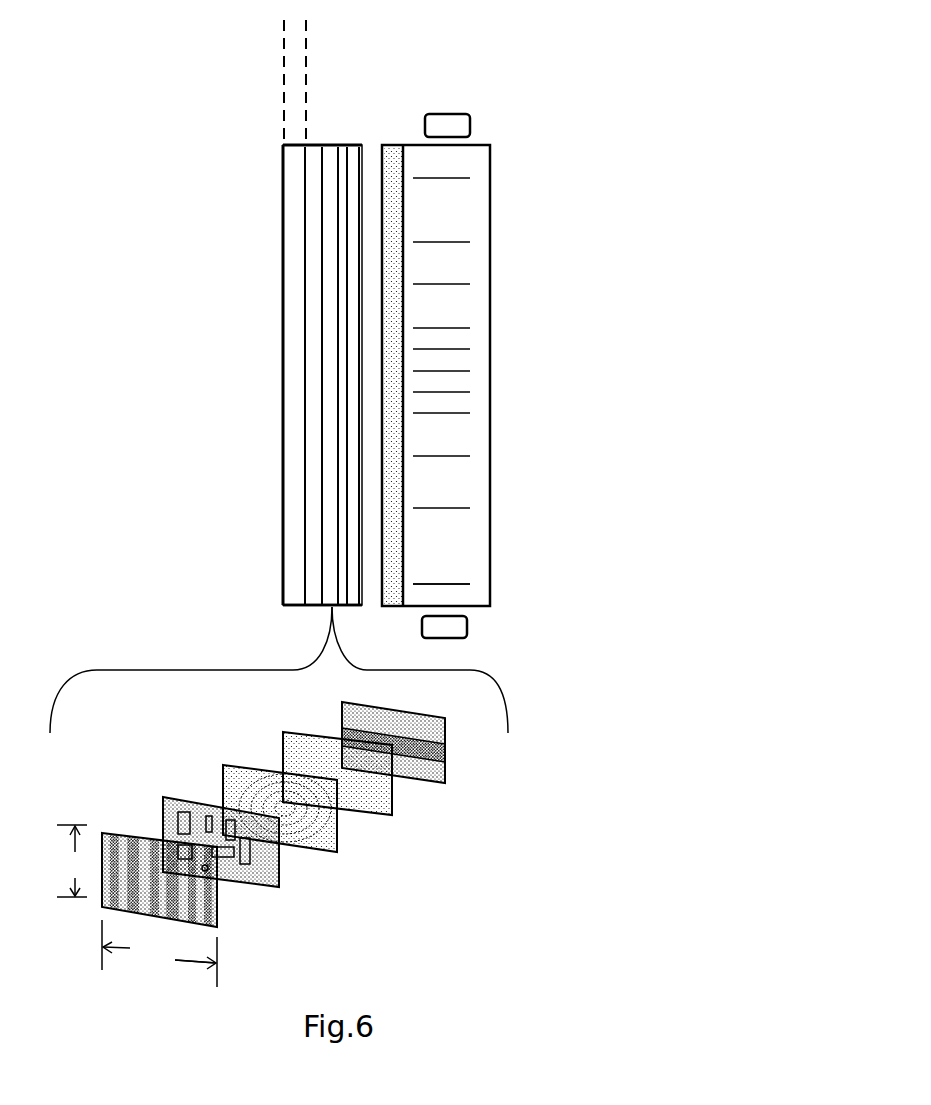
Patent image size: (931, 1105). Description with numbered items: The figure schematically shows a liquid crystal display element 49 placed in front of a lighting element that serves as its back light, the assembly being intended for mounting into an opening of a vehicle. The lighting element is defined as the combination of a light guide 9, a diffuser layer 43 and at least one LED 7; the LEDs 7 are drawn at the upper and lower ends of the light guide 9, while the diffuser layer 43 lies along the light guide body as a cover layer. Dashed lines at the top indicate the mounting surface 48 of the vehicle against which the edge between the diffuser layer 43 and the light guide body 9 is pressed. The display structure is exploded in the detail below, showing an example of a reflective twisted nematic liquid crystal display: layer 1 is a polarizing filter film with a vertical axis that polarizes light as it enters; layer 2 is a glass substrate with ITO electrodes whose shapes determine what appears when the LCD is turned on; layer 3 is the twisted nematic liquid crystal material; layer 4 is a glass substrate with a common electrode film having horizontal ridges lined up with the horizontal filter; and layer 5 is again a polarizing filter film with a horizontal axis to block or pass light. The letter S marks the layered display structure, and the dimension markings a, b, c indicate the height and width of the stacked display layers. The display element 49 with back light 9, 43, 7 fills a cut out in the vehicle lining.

The mounting surface 48 is at (284, 72).
The security element / layered structure S is at (273, 210).
The display element 49 is at (283, 605).
The light guide 9 is at (467, 477).
The diffuser layer 43 is at (388, 595).
The LED 7 is at (443, 114).
The polarizing filter film 1 is at (164, 880).
The glass substrate with ITO electrodes 2 is at (226, 846).
The twisted nematic liquid crystal material 3 is at (285, 810).
The glass substrate with common electrode film 4 is at (343, 777).
The polarizing filter film 5 is at (398, 744).
The layer height dimension a is at (72, 861).
The layer width dimension b is at (159, 953).
The layer width dimension c is at (195, 961).